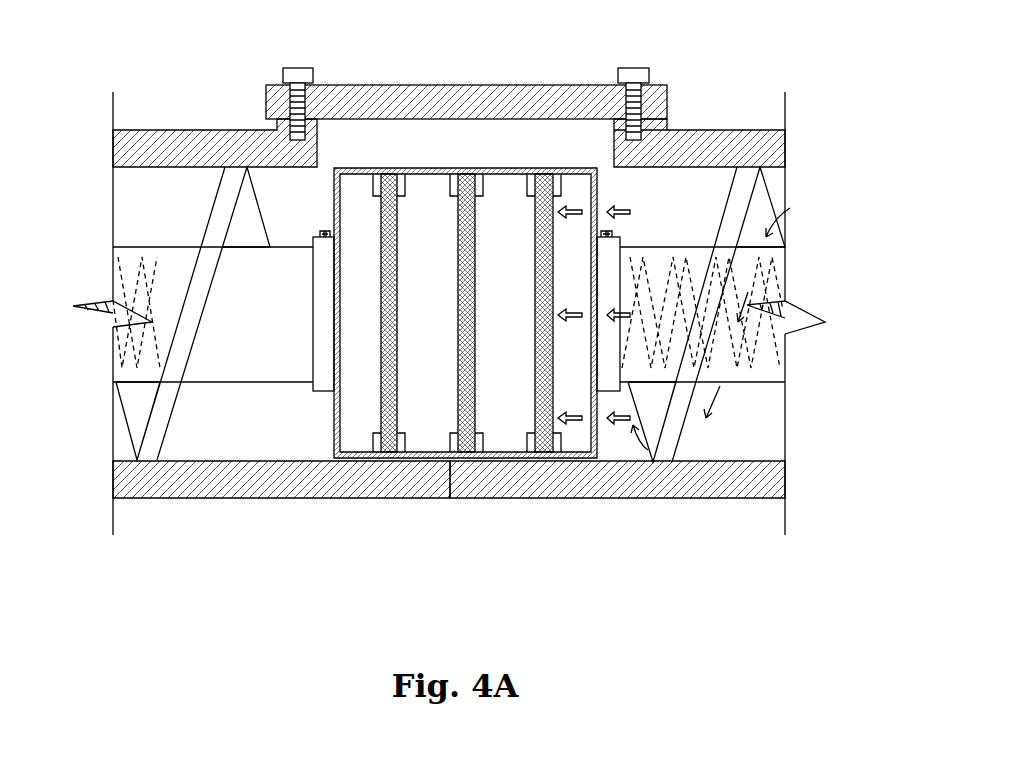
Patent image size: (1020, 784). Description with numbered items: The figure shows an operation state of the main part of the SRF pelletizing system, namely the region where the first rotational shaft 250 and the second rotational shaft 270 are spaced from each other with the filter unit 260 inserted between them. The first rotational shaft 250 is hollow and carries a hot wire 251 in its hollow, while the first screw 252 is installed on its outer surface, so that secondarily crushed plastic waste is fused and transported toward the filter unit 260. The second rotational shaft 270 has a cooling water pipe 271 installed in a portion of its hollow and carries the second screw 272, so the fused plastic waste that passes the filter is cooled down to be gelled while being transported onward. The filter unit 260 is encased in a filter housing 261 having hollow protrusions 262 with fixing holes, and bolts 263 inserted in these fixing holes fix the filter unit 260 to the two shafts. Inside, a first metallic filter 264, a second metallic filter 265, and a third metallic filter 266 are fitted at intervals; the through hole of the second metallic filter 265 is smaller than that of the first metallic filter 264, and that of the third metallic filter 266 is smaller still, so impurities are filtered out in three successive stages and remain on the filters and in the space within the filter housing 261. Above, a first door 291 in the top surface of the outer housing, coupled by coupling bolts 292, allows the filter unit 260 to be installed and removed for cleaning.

The first rotational shaft 250 is at (726, 400).
The hot wire 251 is at (782, 280).
The first screw 252 is at (742, 195).
The filter unit 260 is at (482, 294).
The filter housing 261 is at (566, 172).
The hollow protrusion 262 is at (322, 378).
The bolt 263 is at (327, 230).
The first metallic filter 264 is at (545, 448).
The second metallic filter 265 is at (466, 448).
The third metallic filter 266 is at (389, 448).
The second rotational shaft 270 is at (205, 375).
The cooling water pipe 271 is at (115, 282).
The second screw 272 is at (226, 195).
The first door 291 is at (478, 90).
The coupling bolt 292 is at (298, 68).